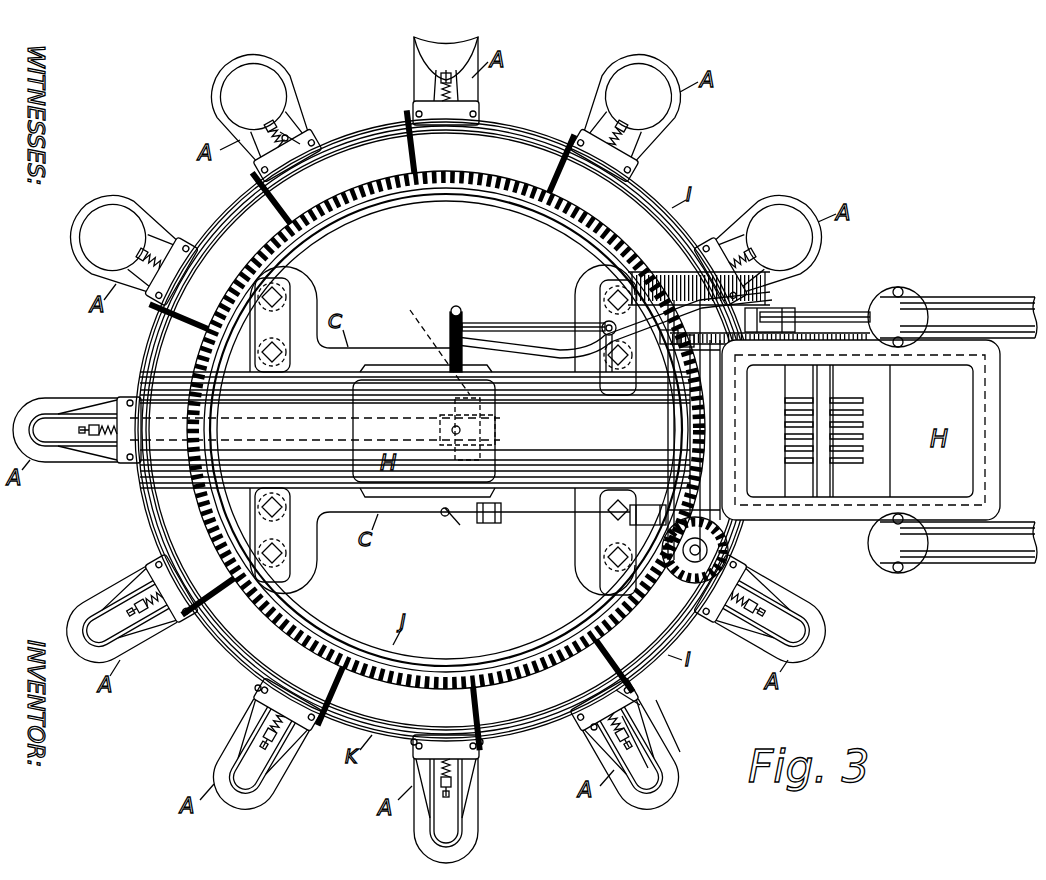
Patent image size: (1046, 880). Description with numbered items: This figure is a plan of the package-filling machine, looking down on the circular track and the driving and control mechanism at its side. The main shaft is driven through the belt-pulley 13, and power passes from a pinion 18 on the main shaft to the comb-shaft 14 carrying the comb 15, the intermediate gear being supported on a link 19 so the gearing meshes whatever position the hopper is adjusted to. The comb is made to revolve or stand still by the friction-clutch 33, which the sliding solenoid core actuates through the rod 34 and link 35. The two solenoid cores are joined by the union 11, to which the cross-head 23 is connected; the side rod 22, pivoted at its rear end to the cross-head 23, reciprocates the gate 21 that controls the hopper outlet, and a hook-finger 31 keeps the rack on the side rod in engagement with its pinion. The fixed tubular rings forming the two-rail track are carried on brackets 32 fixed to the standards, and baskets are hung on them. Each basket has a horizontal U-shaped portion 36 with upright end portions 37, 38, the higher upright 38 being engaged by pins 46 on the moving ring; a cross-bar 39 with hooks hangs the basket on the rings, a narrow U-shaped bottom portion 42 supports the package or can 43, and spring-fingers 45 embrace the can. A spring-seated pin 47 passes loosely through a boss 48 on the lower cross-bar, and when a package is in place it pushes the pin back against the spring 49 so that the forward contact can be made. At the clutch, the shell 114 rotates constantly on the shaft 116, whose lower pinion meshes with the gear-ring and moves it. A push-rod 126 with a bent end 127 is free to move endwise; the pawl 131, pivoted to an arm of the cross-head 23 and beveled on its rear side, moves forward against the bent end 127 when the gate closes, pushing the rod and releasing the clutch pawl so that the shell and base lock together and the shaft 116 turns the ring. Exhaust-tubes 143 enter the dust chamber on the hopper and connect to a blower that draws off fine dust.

The union 11 is at (455, 405).
The belt-pulley 13 is at (752, 290).
The comb-shaft 14 is at (818, 500).
The comb 15 is at (850, 458).
The pinion 18 is at (665, 340).
The link 19 is at (682, 347).
The gate 21 is at (858, 420).
The side rod 22 is at (520, 322).
The cross-head 23 is at (450, 345).
The hook-finger 31 is at (820, 315).
The brackets 32 is at (205, 240).
The clutch 33 is at (790, 312).
The rod 34 is at (555, 345).
The link 35 is at (440, 410).
The horizontal U-shaped portion 36 is at (66, 634).
The upright end portion 37 is at (408, 745).
The upright end portion 38 is at (492, 745).
The cross-bar 39 is at (256, 690).
The U-shaped bottom portion 42 is at (268, 776).
The package or can 43 is at (763, 247).
The spring-fingers 45 is at (645, 725).
The pins 46 is at (410, 150).
The spring-seated pin 47 is at (283, 125).
The boss 48 is at (262, 150).
The spring 49 is at (290, 140).
The shell of the clutch 114 is at (730, 552).
The shaft 116 is at (590, 580).
The push-rod 126 is at (560, 520).
The bent end 127 is at (445, 516).
The pawl 131 is at (485, 524).
The exhaust-tubes 143 is at (950, 300).